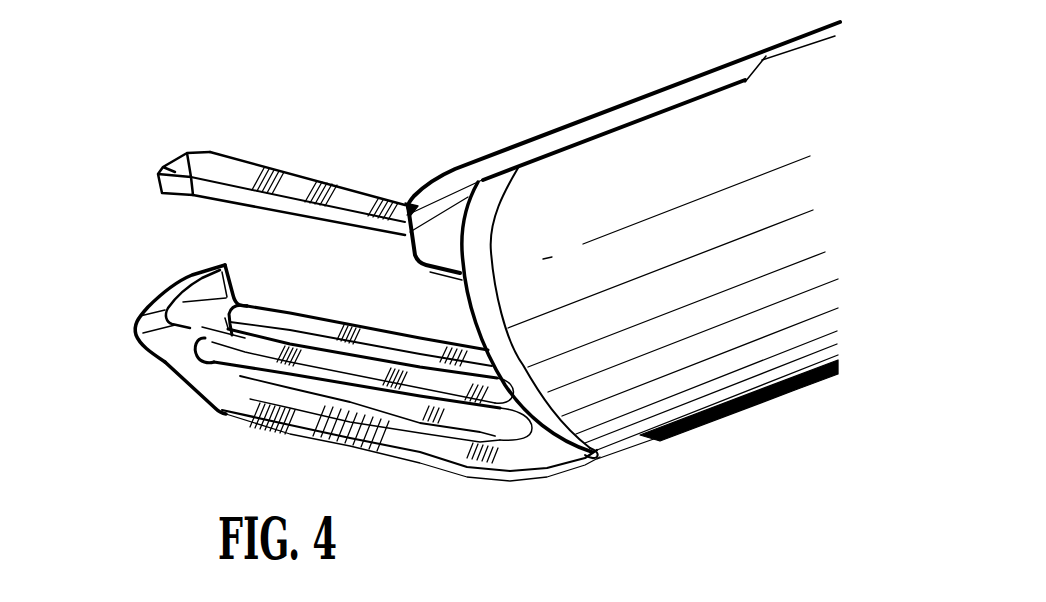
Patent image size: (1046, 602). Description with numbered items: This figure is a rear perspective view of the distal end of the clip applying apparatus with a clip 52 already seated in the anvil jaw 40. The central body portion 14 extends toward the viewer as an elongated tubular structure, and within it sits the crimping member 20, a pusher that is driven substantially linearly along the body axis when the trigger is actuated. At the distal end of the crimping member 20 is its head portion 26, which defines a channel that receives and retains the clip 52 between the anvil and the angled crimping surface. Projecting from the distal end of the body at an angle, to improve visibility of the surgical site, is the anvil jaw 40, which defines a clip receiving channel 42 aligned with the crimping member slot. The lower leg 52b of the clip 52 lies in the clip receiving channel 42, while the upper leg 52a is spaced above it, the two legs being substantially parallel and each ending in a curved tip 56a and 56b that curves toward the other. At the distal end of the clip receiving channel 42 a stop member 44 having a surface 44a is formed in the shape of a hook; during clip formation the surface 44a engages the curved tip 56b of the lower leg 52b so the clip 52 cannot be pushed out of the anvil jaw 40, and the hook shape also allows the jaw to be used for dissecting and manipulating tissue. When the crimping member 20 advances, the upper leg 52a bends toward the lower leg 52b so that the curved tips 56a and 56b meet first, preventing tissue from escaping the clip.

The central body portion 14 is at (715, 417).
The crimping member 20 is at (597, 127).
The head portion 26 is at (463, 177).
The anvil jaw 40 is at (308, 423).
The clip receiving channel 42 is at (379, 357).
The stop member 44 is at (195, 318).
The surface 44a is at (163, 347).
The clip 52 is at (239, 148).
The leg 52a is at (343, 193).
The leg 52b is at (267, 352).
The curved tip 56a is at (170, 157).
The curved tip 56b is at (250, 340).